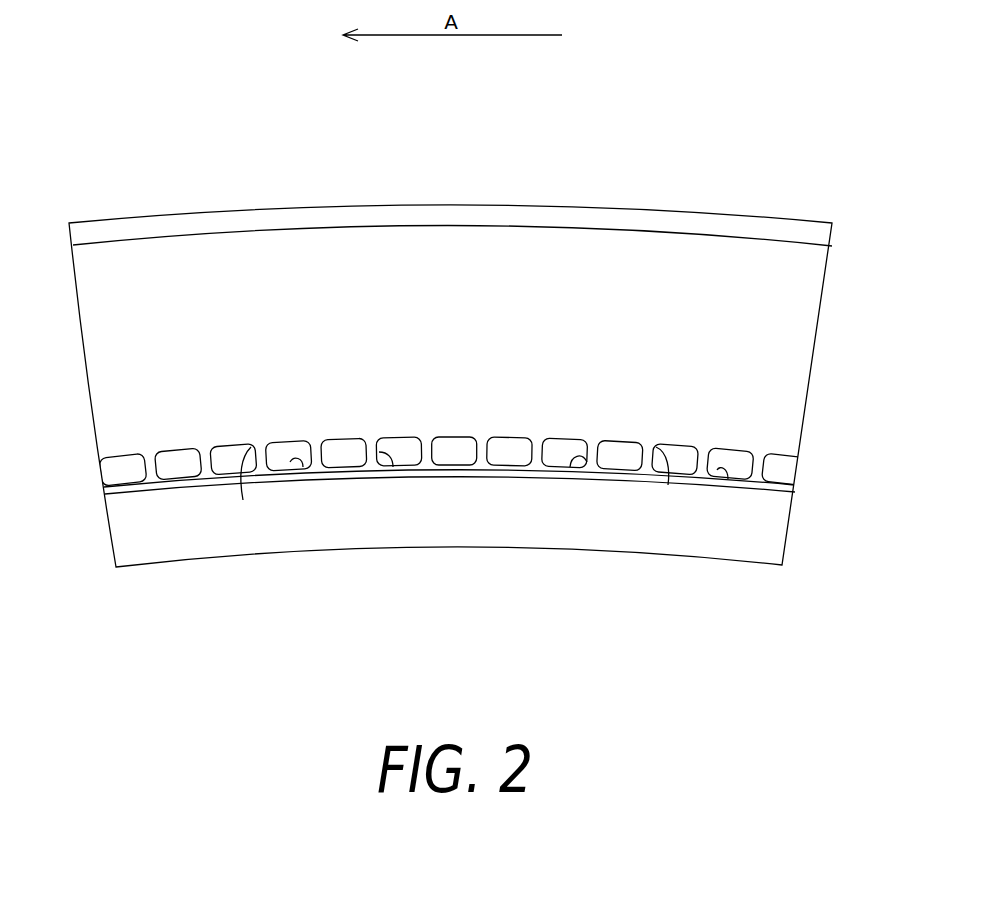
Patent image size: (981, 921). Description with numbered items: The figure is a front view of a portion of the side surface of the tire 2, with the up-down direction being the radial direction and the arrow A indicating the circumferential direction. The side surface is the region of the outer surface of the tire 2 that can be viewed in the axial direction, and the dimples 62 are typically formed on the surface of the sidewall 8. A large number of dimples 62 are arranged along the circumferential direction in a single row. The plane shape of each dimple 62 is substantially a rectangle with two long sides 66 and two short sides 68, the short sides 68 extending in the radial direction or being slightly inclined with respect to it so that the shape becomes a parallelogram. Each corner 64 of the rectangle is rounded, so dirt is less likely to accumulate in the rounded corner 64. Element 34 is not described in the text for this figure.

The tire 2 is at (645, 170).
The sidewall 8 is at (390, 287).
The ring-shaped rib 34 is at (508, 478).
The dimple 62 is at (177, 467).
The corner 64 is at (243, 500).
The long side 66 is at (513, 462).
The short side 68 is at (393, 467).